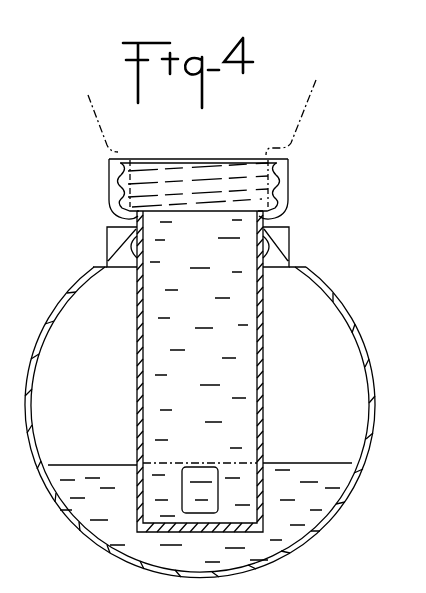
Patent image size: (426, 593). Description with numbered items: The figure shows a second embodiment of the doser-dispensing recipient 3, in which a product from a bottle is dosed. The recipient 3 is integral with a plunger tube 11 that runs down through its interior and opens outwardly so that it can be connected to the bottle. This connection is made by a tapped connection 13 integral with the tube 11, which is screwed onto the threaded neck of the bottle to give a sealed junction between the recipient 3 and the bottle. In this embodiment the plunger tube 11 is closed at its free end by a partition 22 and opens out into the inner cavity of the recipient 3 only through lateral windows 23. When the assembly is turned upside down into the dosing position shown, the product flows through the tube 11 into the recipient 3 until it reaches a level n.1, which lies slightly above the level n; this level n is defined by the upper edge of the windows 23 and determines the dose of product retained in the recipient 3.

The tapped connection 13 is at (290, 192).
The recipient 3 is at (362, 338).
The plunger tube 11 is at (265, 384).
The partition 22 is at (219, 533).
The lateral windows 23 is at (185, 495).
The level n is at (221, 462).
The level n.1 is at (297, 462).